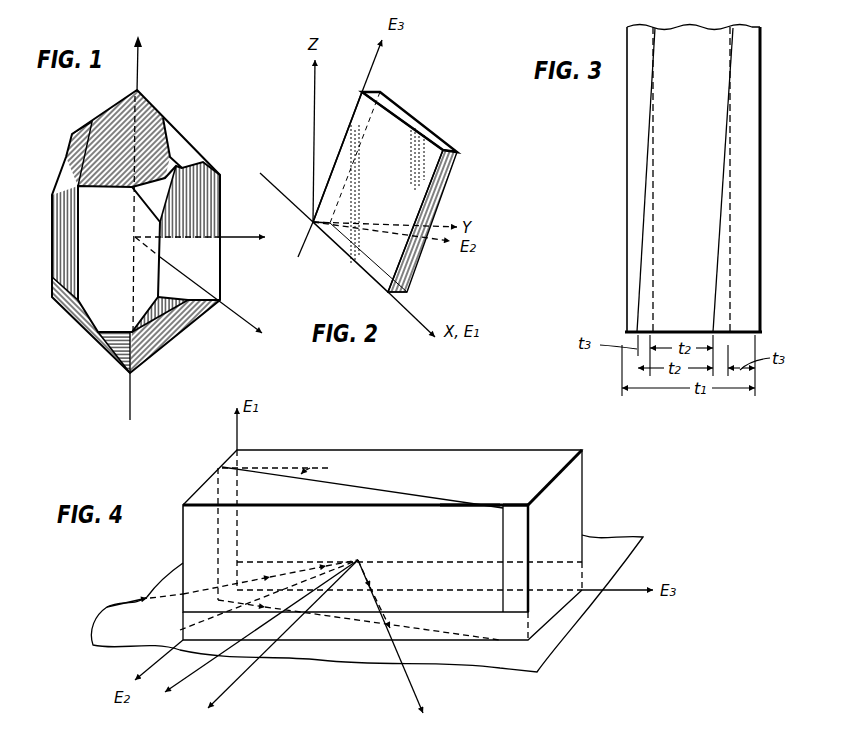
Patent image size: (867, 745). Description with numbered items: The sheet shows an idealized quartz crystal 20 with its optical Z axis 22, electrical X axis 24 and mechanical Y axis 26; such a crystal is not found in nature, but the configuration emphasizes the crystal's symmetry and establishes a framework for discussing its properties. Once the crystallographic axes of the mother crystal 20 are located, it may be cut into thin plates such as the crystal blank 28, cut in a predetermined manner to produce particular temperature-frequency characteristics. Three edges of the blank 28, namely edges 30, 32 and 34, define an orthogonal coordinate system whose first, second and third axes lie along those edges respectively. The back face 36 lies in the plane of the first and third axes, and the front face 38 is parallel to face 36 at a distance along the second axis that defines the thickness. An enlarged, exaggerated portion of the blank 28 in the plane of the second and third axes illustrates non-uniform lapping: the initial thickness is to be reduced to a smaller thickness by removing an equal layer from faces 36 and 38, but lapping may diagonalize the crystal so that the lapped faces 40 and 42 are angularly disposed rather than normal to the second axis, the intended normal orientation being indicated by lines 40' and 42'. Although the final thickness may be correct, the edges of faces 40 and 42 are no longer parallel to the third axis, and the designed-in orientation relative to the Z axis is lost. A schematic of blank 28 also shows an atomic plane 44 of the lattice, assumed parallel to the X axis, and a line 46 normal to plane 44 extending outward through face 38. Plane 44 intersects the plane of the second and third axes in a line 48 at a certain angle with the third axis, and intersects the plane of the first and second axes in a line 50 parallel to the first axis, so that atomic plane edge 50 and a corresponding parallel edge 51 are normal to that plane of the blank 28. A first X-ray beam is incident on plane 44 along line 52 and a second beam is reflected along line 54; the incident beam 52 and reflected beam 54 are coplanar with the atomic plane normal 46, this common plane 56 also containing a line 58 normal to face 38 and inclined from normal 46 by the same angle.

In FIG. 1, the quartz crystal 20 is at (198, 181).
In FIG. 1, the optical Z axis 22 is at (141, 75).
In FIG. 1, the electrical X axis 24 is at (232, 306).
In FIG. 1, the mechanical Y axis 26 is at (230, 237).
In FIG. 2, the crystal blank 28 is at (382, 190).
In FIG. 4, the crystal blank 28 is at (390, 529).
In FIG. 2, the crystal edge 30 is at (322, 254).
In FIG. 2, the crystal edge 32 is at (402, 294).
In FIG. 2, the crystal edge 34 is at (330, 175).
In FIG. 2, the back face 36 is at (418, 155).
In FIG. 3, the back face 36 is at (626, 177).
In FIG. 2, the front face 38 is at (402, 195).
In FIG. 3, the front face 38 is at (761, 178).
In FIG. 4, the front face 38 is at (524, 522).
In FIG. 3, the lapped face 40 is at (619, 180).
In FIG. 3, the lapped face 42 is at (758, 180).
In FIG. 3, the line 40' is at (617, 179).
In FIG. 3, the line 42' is at (769, 179).
In FIG. 4, the atomic plane 44 is at (465, 522).
In FIG. 4, the atomic plane normal 46 is at (198, 673).
In FIG. 4, the line 48 is at (425, 627).
In FIG. 4, the atomic plane edge 50 is at (212, 493).
In FIG. 4, the parallel edge 51 is at (502, 541).
In FIG. 4, the incident X-ray beam 52 is at (127, 603).
In FIG. 4, the reflected X-ray beam 54 is at (418, 693).
In FIG. 4, the common plane 56 is at (618, 553).
In FIG. 4, the line normal to crystal face 58 is at (252, 672).